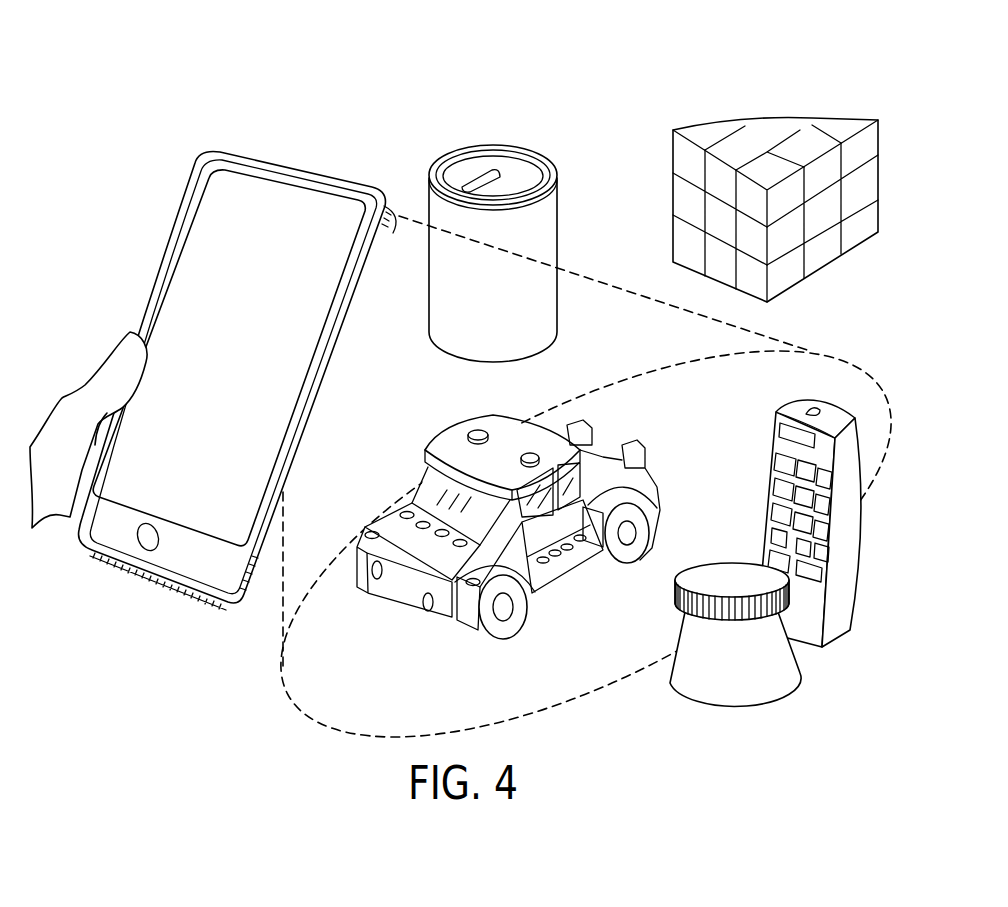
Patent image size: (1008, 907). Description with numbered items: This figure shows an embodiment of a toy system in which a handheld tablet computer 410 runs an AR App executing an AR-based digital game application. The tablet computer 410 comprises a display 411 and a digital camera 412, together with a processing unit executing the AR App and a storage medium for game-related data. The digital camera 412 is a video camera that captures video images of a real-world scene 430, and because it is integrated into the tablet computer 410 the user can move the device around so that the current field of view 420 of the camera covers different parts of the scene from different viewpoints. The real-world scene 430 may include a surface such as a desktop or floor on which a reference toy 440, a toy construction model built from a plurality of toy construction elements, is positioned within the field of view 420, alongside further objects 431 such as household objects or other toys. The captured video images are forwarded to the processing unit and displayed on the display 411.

The tablet computer 410 is at (213, 351).
The display 411 is at (253, 210).
The digital camera 412 is at (386, 207).
The field of view 420 is at (325, 693).
The real-world scene 430 is at (617, 404).
The objects 431 is at (738, 148).
The reference toy 440 is at (418, 490).